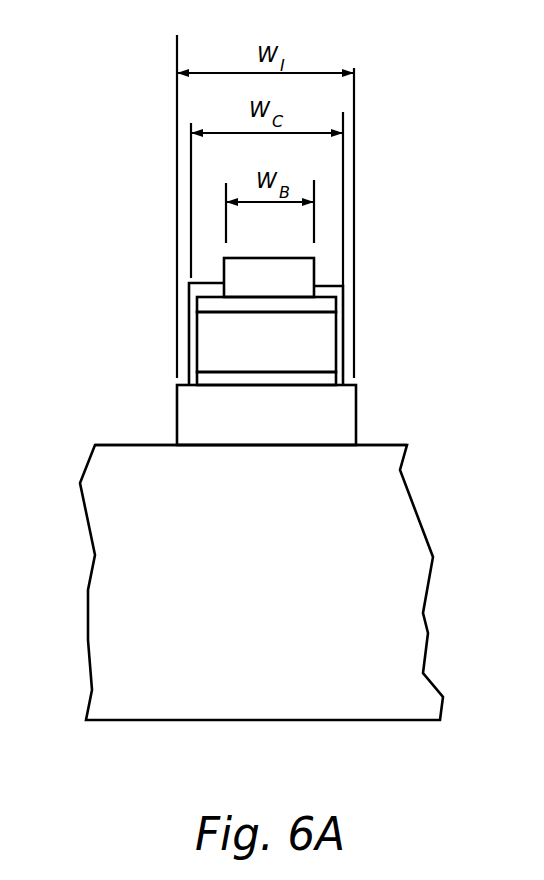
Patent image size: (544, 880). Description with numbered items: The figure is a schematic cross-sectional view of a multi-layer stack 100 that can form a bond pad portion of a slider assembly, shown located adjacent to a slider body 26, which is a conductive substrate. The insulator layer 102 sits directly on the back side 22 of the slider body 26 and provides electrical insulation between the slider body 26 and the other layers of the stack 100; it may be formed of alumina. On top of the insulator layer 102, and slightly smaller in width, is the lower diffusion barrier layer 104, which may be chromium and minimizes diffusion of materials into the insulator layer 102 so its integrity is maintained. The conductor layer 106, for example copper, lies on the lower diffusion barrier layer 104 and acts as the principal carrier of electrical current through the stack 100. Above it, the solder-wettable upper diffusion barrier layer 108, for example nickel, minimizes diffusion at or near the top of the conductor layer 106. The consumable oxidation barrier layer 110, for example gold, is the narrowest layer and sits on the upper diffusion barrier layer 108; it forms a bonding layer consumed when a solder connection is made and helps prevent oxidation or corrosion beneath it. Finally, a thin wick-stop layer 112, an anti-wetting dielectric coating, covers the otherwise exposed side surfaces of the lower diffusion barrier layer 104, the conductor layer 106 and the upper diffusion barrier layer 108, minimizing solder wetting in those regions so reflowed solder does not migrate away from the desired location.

The multi-layer stack 100 is at (397, 151).
The insulator layer 102 is at (340, 432).
The lower diffusion barrier layer 104 is at (313, 379).
The conductor layer 106 is at (292, 347).
The upper diffusion barrier layer 108 is at (328, 305).
The oxidation barrier layer 110 is at (282, 275).
The wick-stop layer 112 is at (323, 288).
The back side 22 is at (141, 440).
The slider body 26 is at (280, 686).